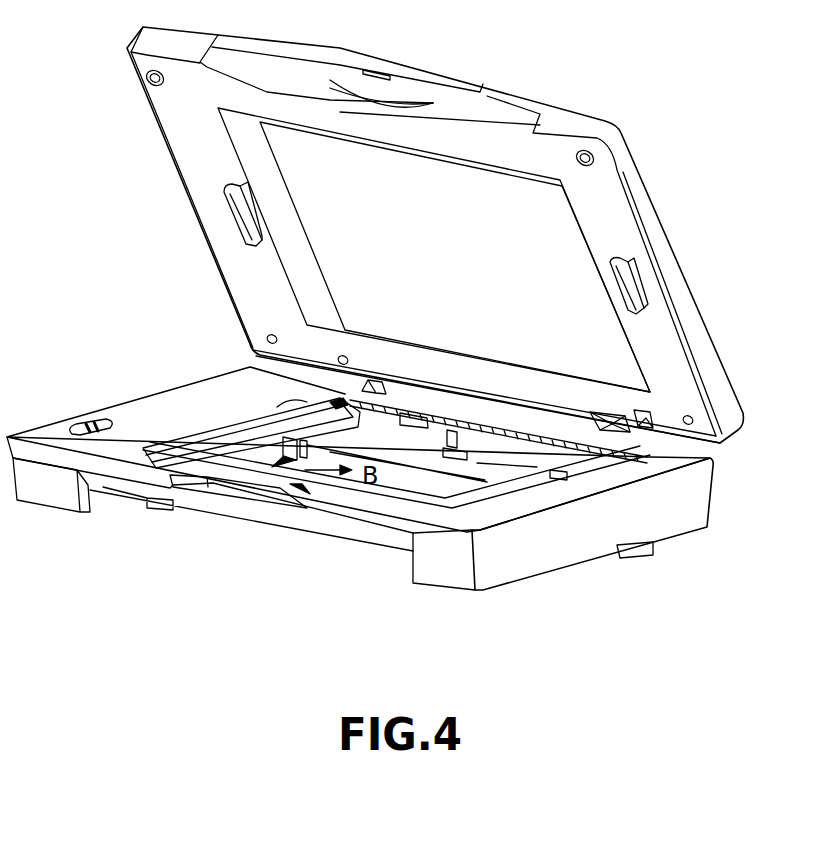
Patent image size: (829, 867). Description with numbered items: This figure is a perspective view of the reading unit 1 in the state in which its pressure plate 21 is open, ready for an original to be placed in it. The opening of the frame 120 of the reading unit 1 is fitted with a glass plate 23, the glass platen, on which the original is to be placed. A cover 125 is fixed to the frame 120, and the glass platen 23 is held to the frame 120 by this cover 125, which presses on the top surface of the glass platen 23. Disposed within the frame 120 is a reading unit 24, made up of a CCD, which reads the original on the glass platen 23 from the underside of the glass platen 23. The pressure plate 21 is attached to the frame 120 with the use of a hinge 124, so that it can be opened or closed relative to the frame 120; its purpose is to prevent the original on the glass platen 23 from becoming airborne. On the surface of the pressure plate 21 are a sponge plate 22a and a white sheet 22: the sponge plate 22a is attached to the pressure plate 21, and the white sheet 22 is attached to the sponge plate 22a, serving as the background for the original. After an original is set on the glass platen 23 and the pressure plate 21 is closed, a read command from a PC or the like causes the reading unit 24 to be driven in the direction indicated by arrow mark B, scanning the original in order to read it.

The reading unit 1 is at (200, 335).
The pressure plate 21 is at (208, 200).
The white sheet 22 is at (560, 255).
The sponge plate 22a is at (245, 128).
The glass plate 23 is at (430, 485).
The reading unit 24 is at (213, 450).
The frame 120 is at (557, 552).
The hinge 124 is at (627, 433).
The cover 125 is at (162, 418).